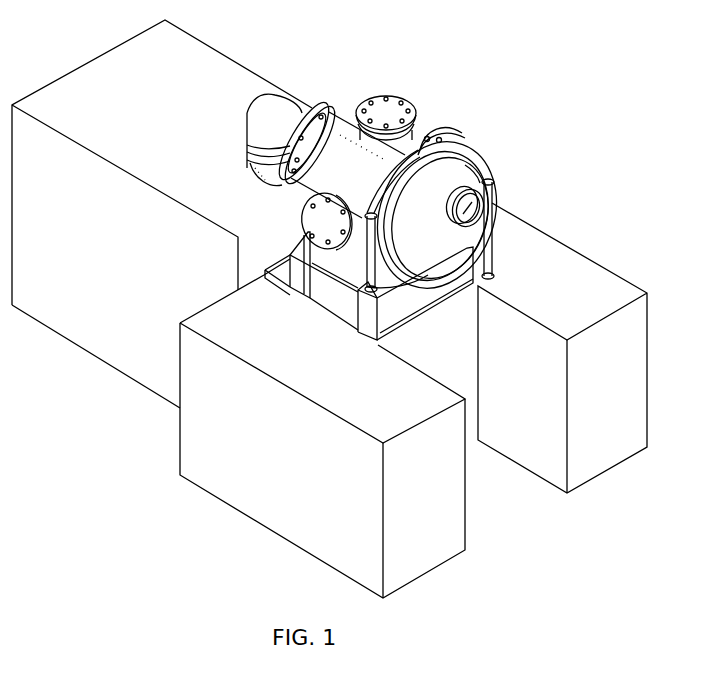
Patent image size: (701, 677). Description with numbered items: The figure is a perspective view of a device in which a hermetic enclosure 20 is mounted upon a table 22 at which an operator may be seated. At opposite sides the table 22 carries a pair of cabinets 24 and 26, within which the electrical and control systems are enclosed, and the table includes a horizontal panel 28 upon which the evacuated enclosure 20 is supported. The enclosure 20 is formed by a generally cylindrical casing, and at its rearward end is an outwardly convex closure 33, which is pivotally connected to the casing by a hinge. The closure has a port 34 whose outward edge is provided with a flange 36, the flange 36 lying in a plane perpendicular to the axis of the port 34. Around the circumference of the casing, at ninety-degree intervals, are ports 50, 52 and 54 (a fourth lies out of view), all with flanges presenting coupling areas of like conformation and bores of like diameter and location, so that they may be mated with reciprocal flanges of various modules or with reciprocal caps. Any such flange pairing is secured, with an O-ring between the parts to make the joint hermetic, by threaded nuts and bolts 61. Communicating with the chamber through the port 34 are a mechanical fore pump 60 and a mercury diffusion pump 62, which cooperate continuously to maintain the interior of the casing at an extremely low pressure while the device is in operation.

The hermetic enclosure 20 is at (390, 191).
The table 22 is at (350, 304).
The cabinet 24 is at (383, 404).
The cabinet 26 is at (568, 294).
The horizontal panel 28 is at (438, 292).
The outwardly convex closure 33 is at (431, 236).
The port 34 is at (470, 212).
The flange 36 is at (330, 110).
The port 50 is at (292, 228).
The port 52 is at (382, 94).
The port 54 is at (455, 128).
The mechanical fore pump 60 is at (162, 115).
The threaded nuts and bolts 61 is at (402, 106).
The mercury diffusion pump 62 is at (274, 107).